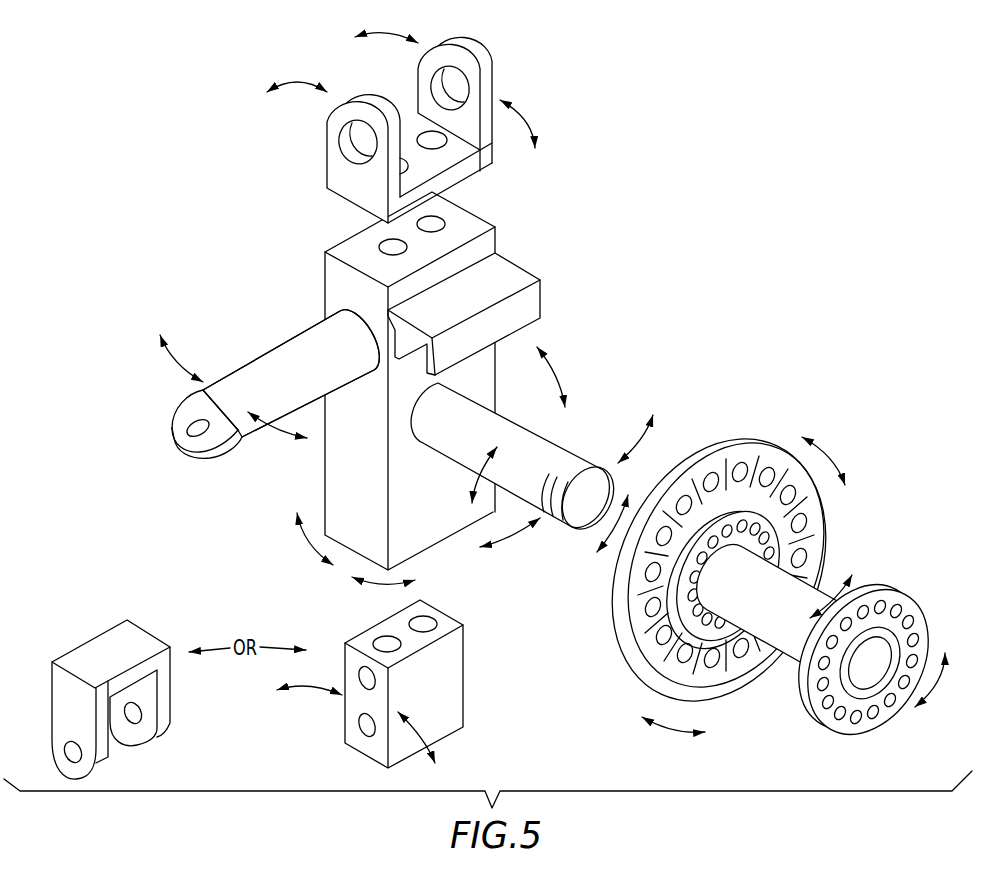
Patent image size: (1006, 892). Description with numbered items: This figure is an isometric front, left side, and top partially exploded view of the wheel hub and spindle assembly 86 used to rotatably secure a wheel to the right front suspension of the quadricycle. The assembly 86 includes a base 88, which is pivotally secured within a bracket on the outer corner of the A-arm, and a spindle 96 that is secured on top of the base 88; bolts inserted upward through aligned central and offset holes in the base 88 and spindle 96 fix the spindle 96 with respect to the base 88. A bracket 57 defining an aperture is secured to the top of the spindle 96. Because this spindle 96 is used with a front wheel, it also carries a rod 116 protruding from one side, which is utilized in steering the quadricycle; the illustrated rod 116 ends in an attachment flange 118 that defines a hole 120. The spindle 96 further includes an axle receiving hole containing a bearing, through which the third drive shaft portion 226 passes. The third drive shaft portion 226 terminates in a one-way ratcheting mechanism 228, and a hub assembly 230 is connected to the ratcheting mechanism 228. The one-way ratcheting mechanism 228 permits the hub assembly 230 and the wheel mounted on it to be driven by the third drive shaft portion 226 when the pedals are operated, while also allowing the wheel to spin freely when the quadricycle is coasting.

The bracket 57 is at (327, 172).
The wheel hub and spindle assembly 86 is at (224, 280).
The base 88 is at (463, 673).
The spindle 96 is at (331, 277).
The rod 116 is at (279, 361).
The attachment flange 118 is at (178, 448).
The hole 120 is at (192, 426).
The third drive shaft portion 226 is at (457, 454).
The one-way ratcheting mechanism 228 is at (599, 396).
The hub assembly 230 is at (903, 566).